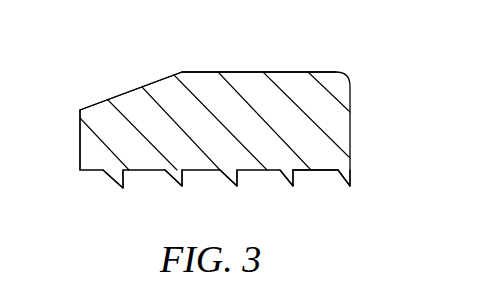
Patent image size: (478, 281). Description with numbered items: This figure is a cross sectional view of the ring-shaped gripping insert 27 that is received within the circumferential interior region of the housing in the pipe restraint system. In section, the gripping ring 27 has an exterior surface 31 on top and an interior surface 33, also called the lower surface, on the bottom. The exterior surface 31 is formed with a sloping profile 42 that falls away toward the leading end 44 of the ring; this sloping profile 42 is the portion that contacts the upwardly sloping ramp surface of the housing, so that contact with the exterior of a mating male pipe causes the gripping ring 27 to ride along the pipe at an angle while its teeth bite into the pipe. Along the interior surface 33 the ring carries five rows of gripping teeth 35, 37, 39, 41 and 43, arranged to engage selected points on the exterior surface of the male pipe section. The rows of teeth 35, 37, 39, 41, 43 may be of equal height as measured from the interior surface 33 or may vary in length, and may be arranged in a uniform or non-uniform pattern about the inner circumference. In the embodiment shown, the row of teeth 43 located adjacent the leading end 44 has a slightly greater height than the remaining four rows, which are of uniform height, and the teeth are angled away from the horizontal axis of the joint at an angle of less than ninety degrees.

The gripping ring insert 27 is at (386, 93).
The exterior surface 31 is at (230, 72).
The sloping profile 42 is at (120, 95).
The leading end 44 is at (78, 140).
The row of teeth 43 is at (115, 186).
The row of teeth 41 is at (174, 184).
The row of teeth 39 is at (235, 184).
The row of teeth 37 is at (289, 184).
The interior surface 33 is at (305, 173).
The row of teeth 35 is at (345, 188).